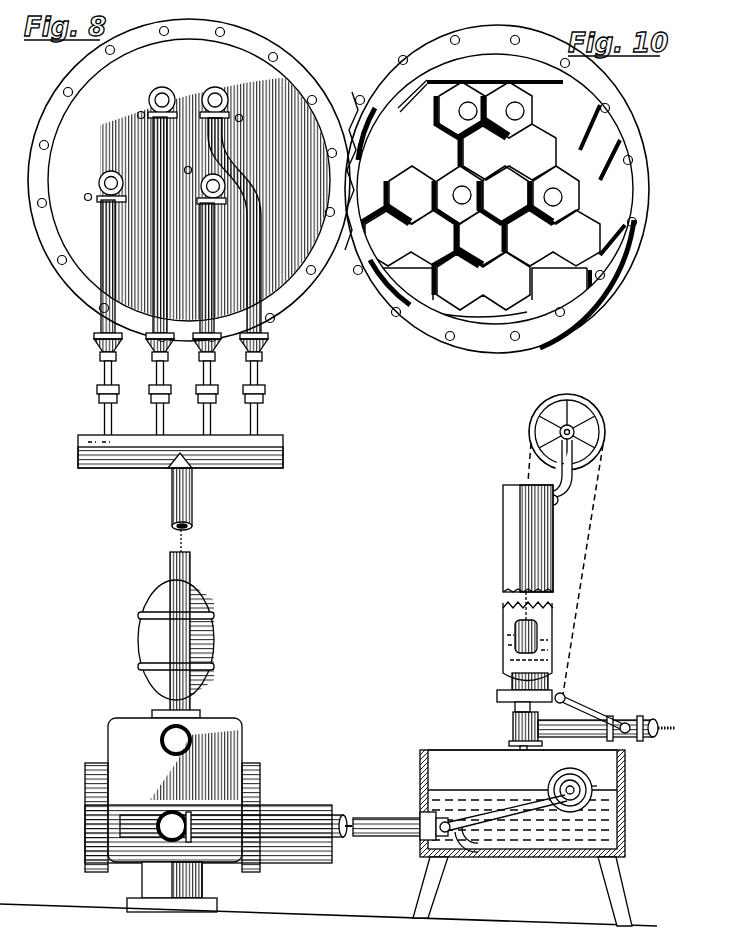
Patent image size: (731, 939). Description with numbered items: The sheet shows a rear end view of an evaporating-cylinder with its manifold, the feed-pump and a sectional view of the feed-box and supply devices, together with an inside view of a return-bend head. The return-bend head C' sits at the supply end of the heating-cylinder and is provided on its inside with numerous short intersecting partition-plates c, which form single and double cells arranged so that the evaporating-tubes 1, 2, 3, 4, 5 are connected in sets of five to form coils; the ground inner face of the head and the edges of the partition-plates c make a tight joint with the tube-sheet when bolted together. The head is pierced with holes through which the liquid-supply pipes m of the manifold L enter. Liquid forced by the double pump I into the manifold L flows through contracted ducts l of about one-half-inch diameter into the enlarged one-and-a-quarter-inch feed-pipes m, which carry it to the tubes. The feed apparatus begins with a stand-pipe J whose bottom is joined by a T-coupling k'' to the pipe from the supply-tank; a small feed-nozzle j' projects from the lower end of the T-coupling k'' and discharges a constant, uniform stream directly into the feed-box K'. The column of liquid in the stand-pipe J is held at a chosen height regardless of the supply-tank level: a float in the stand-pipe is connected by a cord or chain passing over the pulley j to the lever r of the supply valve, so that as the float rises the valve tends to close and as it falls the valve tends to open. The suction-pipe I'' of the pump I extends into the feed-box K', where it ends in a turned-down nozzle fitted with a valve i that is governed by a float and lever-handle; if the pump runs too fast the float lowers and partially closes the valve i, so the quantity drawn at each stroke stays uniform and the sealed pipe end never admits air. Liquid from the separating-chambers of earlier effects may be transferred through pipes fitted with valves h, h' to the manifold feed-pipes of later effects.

In FIG. 8, the return-bend head C' is at (189, 180).
In FIG. 10, the return-bend head C' is at (507, 189).
In FIG. 8, the liquid-supply pipe m is at (179, 210).
In FIG. 8, the contracted duct l is at (181, 387).
In FIG. 8, the manifold L is at (191, 482).
In FIG. 8, the pipe I' is at (176, 626).
In FIG. 8, the double pump I is at (216, 806).
In FIG. 8, the suction-pipe I'' is at (384, 817).
In FIG. 8, the pulley j is at (558, 547).
In FIG. 8, the stand-pipe J is at (528, 538).
In FIG. 8, the T-coupling k'' is at (520, 729).
In FIG. 8, the valve h is at (607, 720).
In FIG. 8, the valve h' is at (616, 711).
In FIG. 8, the lever r is at (592, 708).
In FIG. 8, the feed-box K' is at (522, 838).
In FIG. 8, the feed-nozzle j' is at (559, 788).
In FIG. 8, the valve i is at (493, 823).
In FIG. 10, the partition-plate c is at (422, 278).
In FIG. 10, the evaporating-tube 1 is at (510, 157).
In FIG. 10, the evaporating-tube 2 is at (583, 150).
In FIG. 10, the evaporating-tube 3 is at (412, 151).
In FIG. 10, the evaporating-tube 4 is at (420, 195).
In FIG. 10, the evaporating-tube 5 is at (437, 213).